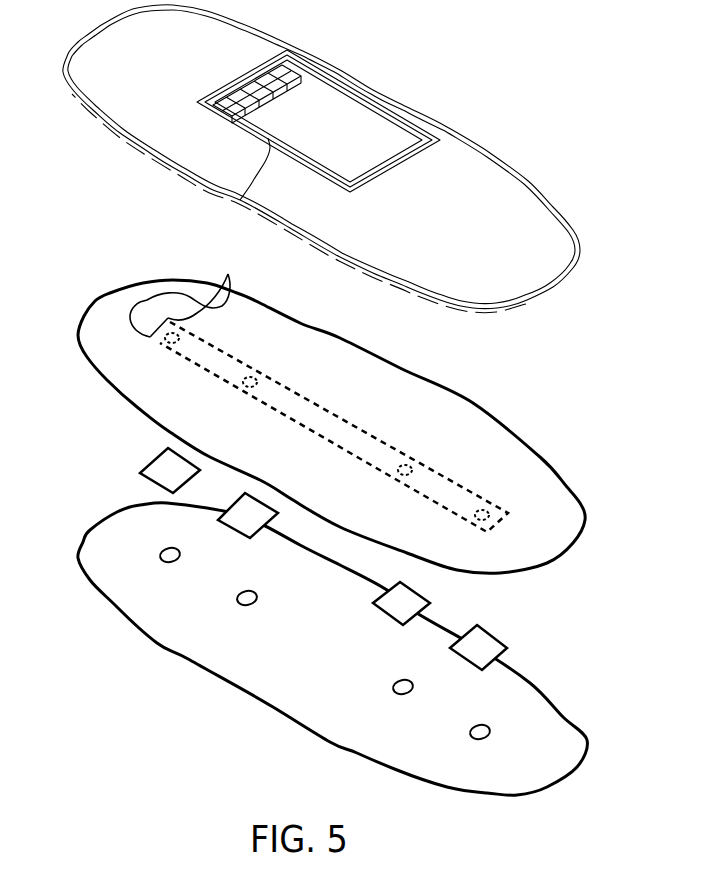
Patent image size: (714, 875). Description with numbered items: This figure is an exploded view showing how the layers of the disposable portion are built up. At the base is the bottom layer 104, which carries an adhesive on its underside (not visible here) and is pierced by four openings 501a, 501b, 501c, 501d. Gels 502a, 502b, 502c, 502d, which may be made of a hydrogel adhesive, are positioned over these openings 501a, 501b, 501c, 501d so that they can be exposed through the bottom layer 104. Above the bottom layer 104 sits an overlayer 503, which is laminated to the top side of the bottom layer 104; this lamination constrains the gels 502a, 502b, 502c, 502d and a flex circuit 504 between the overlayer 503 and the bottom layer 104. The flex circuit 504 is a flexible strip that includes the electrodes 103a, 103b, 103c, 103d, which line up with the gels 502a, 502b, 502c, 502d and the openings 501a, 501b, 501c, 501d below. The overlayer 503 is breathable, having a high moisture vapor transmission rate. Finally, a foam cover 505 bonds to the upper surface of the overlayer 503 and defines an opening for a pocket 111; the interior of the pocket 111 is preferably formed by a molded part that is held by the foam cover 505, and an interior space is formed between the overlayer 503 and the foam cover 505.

The foam cover 505 is at (497, 183).
The pocket 111 is at (347, 135).
The overlayer 503 is at (557, 533).
The flex circuit 504 is at (160, 306).
The electrode 103a is at (166, 340).
The electrode 103b is at (254, 380).
The electrode 103c is at (409, 468).
The electrode 103d is at (486, 512).
The bottom layer 104 is at (535, 713).
The gel 502a is at (160, 473).
The gel 502b is at (240, 518).
The gel 502c is at (413, 602).
The gel 502d is at (490, 647).
The opening 501a is at (165, 558).
The opening 501b is at (240, 603).
The opening 501c is at (393, 692).
The opening 501d is at (473, 735).